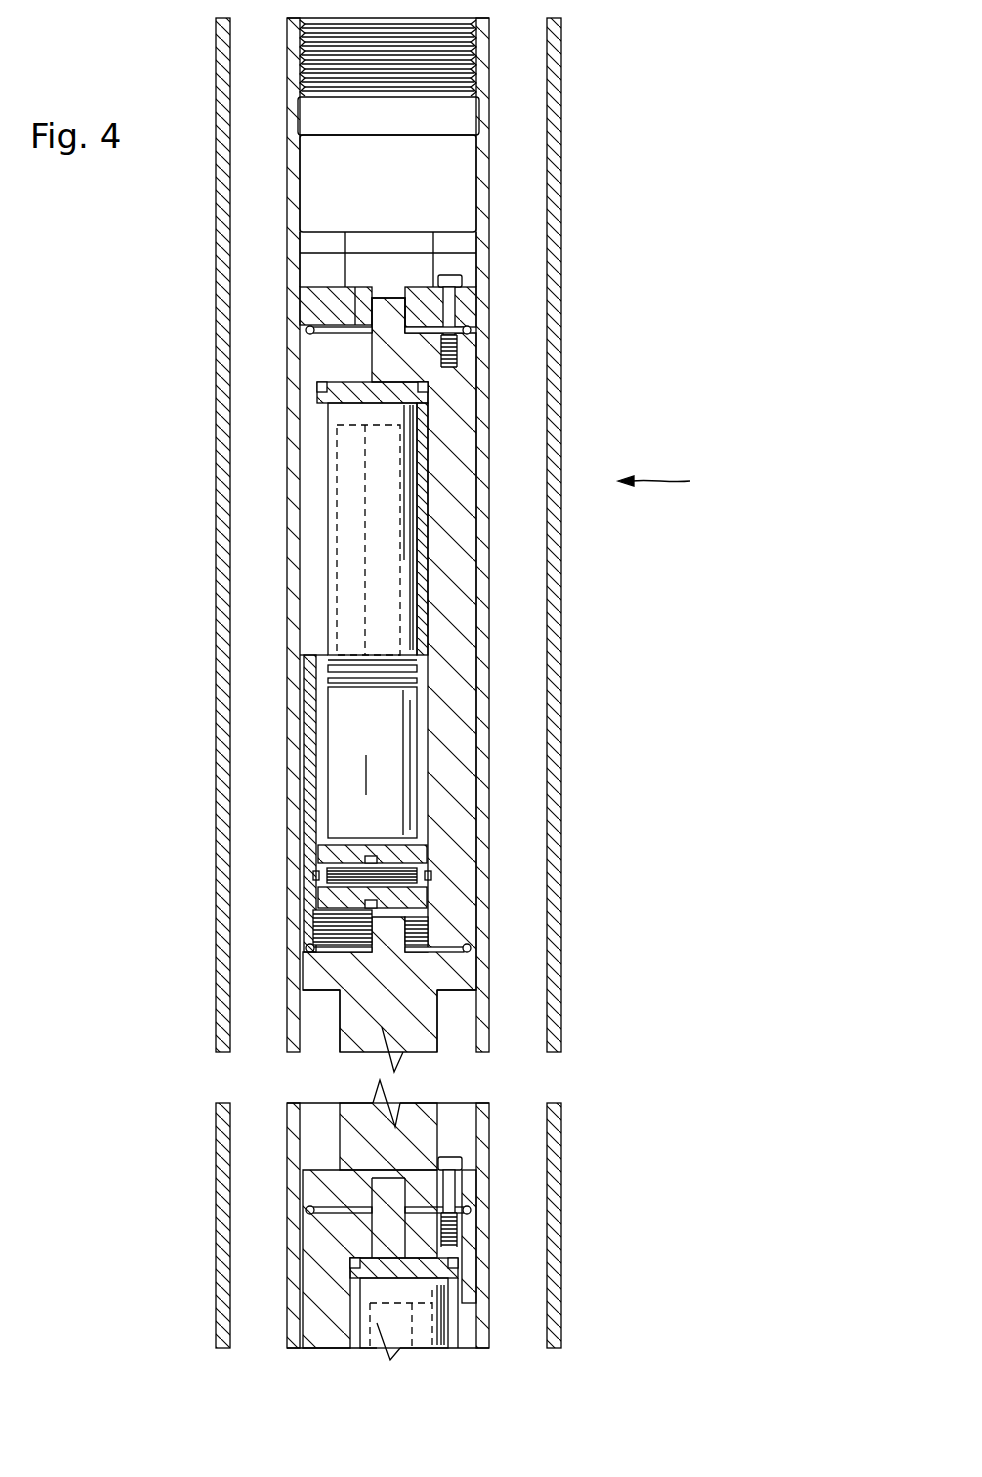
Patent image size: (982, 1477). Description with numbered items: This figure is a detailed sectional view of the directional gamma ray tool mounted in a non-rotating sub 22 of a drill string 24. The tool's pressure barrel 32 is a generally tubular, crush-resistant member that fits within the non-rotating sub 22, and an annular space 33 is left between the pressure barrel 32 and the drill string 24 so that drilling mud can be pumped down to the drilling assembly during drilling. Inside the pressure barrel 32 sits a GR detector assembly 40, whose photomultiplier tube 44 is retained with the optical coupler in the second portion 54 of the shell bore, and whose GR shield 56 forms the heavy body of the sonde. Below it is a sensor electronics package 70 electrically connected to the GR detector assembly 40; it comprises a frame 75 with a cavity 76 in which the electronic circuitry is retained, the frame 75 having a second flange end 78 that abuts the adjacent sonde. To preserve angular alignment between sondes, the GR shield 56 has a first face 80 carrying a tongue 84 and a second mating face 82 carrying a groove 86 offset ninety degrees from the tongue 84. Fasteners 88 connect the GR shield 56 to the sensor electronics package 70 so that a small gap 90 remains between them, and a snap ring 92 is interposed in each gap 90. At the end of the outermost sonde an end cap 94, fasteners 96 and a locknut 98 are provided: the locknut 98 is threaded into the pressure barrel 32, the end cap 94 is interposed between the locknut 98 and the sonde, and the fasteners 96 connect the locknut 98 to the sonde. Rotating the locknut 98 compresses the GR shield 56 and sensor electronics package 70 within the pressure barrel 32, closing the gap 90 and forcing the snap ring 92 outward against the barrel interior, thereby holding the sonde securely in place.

The non-rotating sub 22 is at (562, 385).
The drill string 24 is at (674, 481).
The pressure barrel 32 is at (482, 435).
The annular space 33 is at (522, 596).
The GR detector assembly 40 is at (306, 760).
The photomultiplier tube 44 is at (345, 745).
The second portion 54 is at (455, 752).
The GR shield 56 is at (458, 656).
The sensor electronics package 70 is at (492, 1148).
The frame 75 is at (423, 1118).
The cavity 76 is at (340, 1146).
The second flange end 78 is at (335, 1178).
The first face 80 is at (338, 335).
The second mating face 82 is at (340, 952).
The tongue 84 is at (372, 336).
The groove 86 is at (430, 930).
The fasteners 88 is at (448, 1193).
The small gap 90 is at (318, 313).
The snap rings 92 is at (306, 330).
The end caps 94 is at (316, 306).
The fasteners 96 is at (455, 305).
The locknuts 98 is at (452, 245).